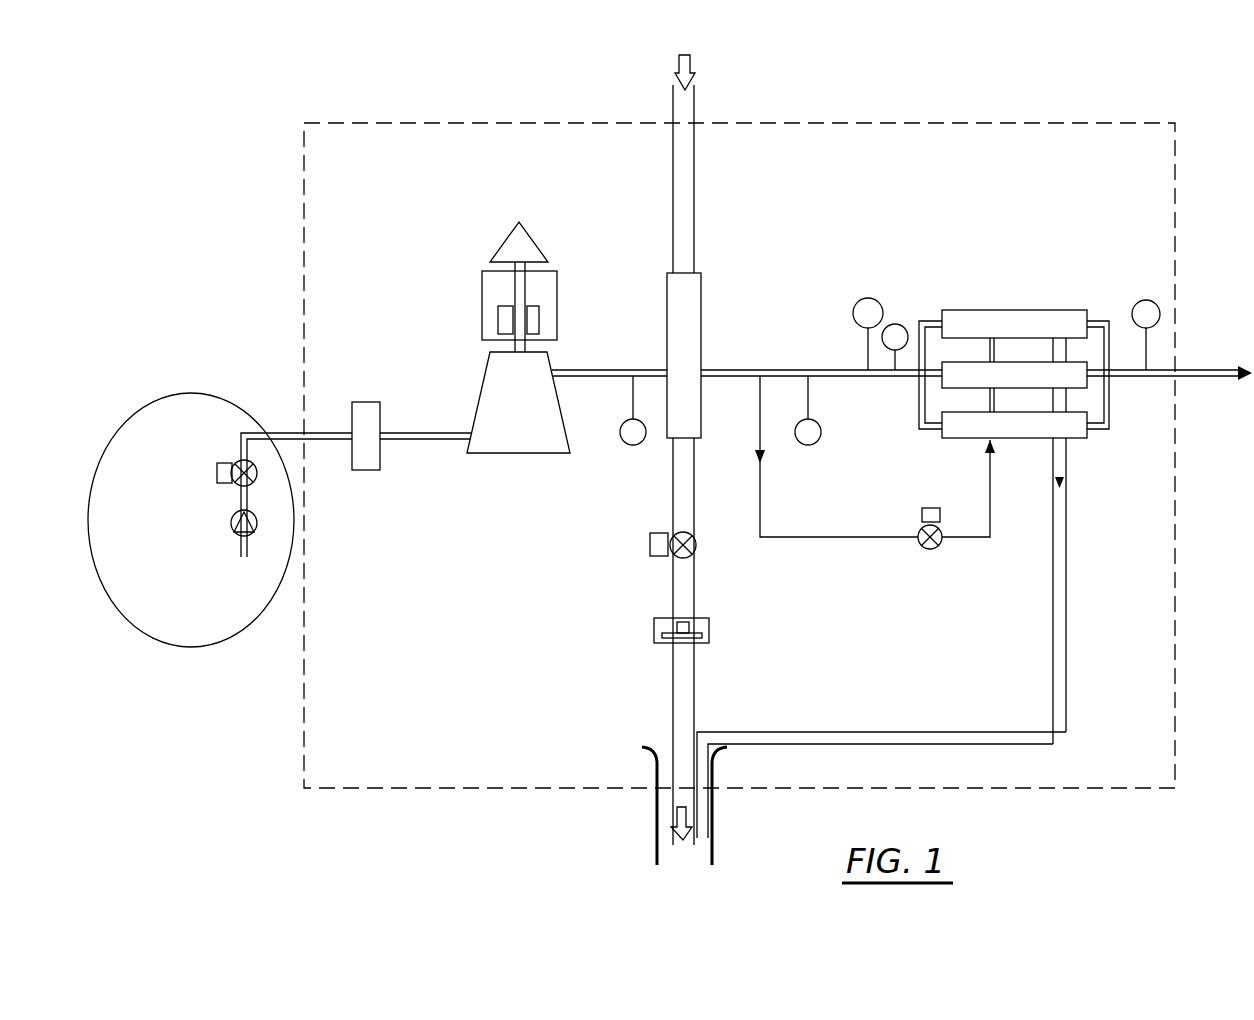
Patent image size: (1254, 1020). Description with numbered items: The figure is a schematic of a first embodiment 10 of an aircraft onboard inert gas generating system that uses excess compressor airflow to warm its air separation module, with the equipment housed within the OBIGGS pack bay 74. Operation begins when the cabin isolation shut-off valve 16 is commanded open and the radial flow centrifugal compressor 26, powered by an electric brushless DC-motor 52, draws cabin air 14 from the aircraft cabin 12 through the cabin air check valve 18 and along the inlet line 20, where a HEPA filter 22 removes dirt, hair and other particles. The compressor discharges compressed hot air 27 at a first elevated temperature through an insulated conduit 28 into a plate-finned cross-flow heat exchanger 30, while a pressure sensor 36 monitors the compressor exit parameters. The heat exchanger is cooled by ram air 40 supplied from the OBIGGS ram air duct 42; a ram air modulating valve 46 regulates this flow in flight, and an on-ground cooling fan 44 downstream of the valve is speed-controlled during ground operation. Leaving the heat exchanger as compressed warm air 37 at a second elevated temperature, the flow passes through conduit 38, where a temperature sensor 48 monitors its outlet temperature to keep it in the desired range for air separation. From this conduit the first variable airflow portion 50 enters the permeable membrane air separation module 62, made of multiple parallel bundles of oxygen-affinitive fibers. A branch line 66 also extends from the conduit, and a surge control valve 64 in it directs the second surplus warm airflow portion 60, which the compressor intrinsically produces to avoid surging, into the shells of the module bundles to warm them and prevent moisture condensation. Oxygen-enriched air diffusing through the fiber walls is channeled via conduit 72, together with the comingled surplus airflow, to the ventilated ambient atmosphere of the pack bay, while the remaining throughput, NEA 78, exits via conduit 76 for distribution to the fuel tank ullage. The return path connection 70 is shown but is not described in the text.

The first embodiment 10 is at (1082, 113).
The aircraft cabin 12 is at (180, 647).
The cabin air 14 is at (244, 558).
The cabin isolation shut-off valve 16 is at (227, 463).
The cabin air check valve 18 is at (232, 520).
The inlet line 20 is at (322, 433).
The HEPA filter 22 is at (368, 470).
The radial flow centrifugal compressor 26 is at (531, 412).
The compressed hot air 27 is at (613, 369).
The insulated conduit 28 is at (605, 377).
The plate-finned cross-flow heat exchanger 30 is at (702, 282).
The pressure sensor 36 is at (633, 445).
The compressed warm air 37 is at (753, 369).
The conduit 38 is at (718, 378).
The ram air 40 is at (690, 115).
The OBIGGS ram air duct 42 is at (690, 82).
The on-ground cooling fan 44 is at (654, 627).
The ram air modulating valve 46 is at (650, 543).
The temperature sensor 48 is at (895, 324).
The first variable airflow portion 50 is at (845, 369).
The electric brushless DC-motor 52 is at (557, 289).
The second surplus warm airflow portion 60 is at (837, 536).
The air separation module 62 is at (1025, 306).
The surge control valve 64 is at (930, 549).
The branch line 66 is at (761, 494).
The return pipe 70 is at (1067, 458).
The conduit 72 is at (1053, 588).
The OBIGGS pack bay 74 is at (305, 242).
The conduit 76 is at (1183, 369).
The NEA 78 is at (1235, 380).